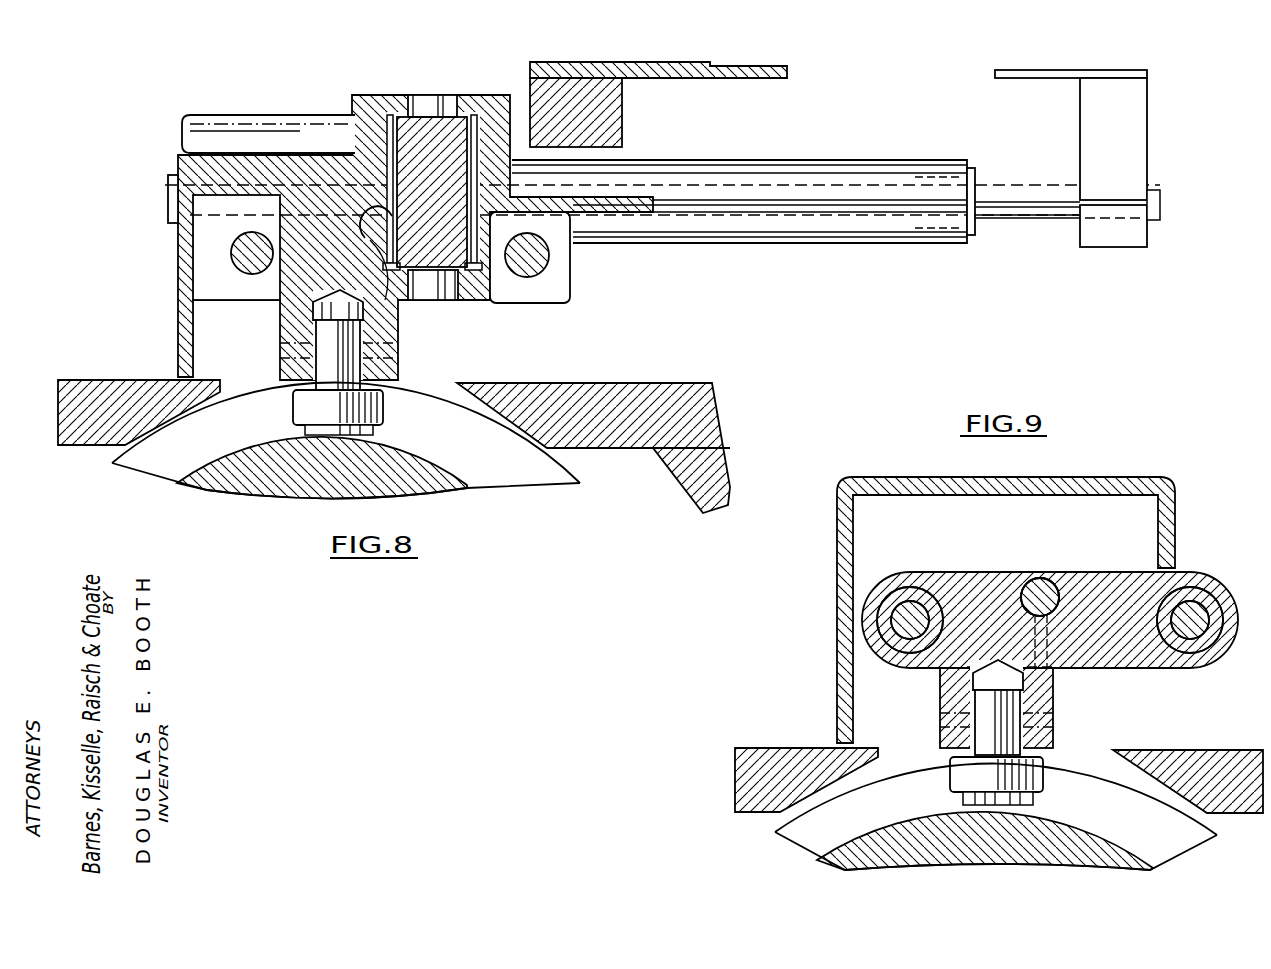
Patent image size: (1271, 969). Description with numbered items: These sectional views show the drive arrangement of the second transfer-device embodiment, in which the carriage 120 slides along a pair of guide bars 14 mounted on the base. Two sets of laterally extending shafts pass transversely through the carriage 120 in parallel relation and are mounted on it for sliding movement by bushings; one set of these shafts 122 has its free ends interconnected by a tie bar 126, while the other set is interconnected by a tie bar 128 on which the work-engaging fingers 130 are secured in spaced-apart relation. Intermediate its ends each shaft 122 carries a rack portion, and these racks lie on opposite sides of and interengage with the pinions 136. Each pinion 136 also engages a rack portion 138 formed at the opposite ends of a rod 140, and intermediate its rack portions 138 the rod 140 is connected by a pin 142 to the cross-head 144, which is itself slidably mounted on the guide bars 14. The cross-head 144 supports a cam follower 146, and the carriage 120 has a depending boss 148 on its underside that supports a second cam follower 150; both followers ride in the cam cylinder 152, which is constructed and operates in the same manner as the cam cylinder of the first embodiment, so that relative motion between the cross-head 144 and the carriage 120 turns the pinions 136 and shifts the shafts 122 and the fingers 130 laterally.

In FIG. 9, the guide bars 14 is at (898, 622).
In FIG. 8, the carriage 120 is at (272, 136).
In FIG. 8, the shafts 122 is at (1032, 195).
In FIG. 8, the tie bar 126 is at (1037, 77).
In FIG. 8, the tie bar 128 is at (612, 115).
In FIG. 8, the work-engaging fingers 130 is at (763, 73).
In FIG. 8, the pinions 136 is at (447, 150).
In FIG. 8, the rack portion 138 is at (341, 120).
In FIG. 8, the rod 140 is at (395, 300).
In FIG. 9, the rod 140 is at (1030, 594).
In FIG. 9, the pin 142 is at (1037, 592).
In FIG. 9, the cross-head 144 is at (990, 575).
In FIG. 9, the cam follower 146 is at (1052, 769).
In FIG. 8, the depending boss 148 is at (297, 303).
In FIG. 8, the cam follower 150 is at (286, 409).
In FIG. 8, the cam cylinder 152 is at (529, 468).
In FIG. 9, the cam cylinder 152 is at (1046, 843).